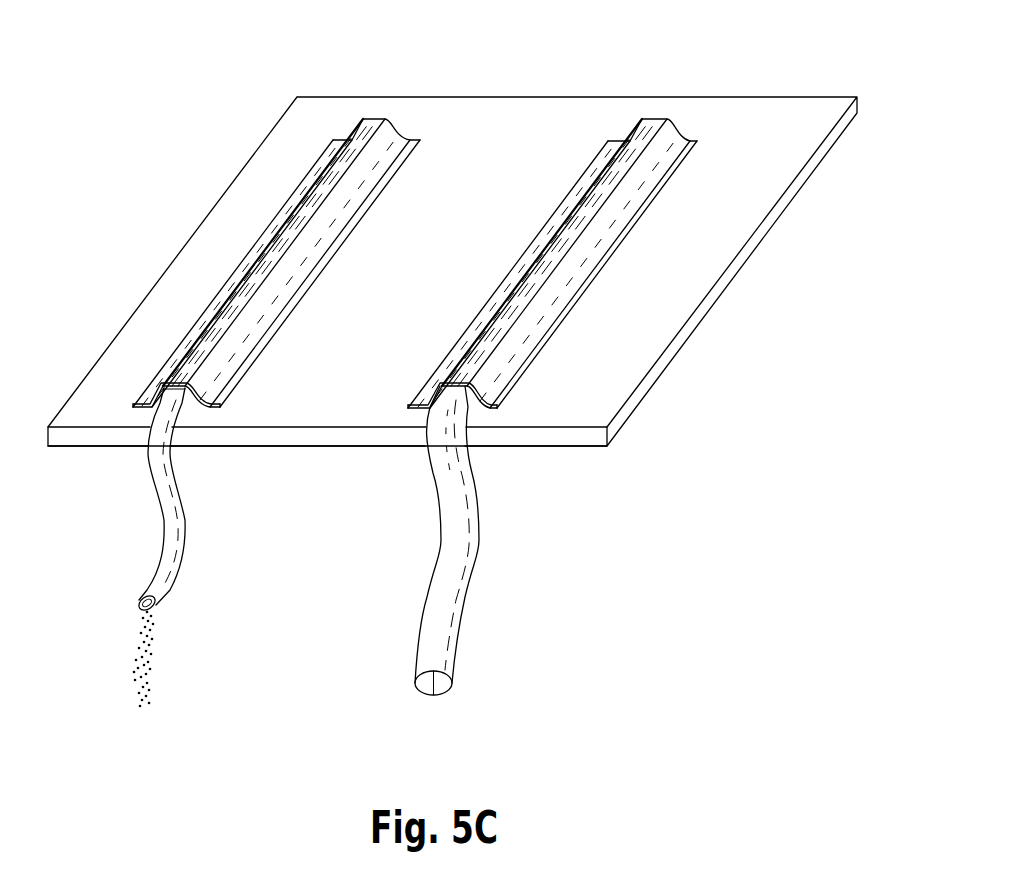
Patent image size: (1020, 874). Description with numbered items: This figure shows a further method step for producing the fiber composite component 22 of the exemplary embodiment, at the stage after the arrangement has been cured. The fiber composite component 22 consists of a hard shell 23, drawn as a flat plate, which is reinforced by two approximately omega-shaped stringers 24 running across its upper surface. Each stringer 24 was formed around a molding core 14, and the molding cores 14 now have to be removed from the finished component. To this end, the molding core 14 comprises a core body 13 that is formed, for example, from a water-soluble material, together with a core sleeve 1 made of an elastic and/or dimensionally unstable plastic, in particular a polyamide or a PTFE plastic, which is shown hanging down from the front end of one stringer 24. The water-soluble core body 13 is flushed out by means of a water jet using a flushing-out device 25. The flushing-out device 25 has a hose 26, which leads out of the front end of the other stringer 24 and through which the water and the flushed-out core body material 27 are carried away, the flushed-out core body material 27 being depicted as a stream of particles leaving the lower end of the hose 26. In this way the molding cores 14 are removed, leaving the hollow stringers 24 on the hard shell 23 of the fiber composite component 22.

The core sleeve 1 is at (467, 552).
The core body 13 is at (158, 385).
The molding core 14 is at (176, 381).
The fiber composite component 22 is at (662, 510).
The hard shell 23 is at (610, 370).
The stringer 24 is at (386, 98).
The flushing-out device 25 is at (130, 525).
The hose 26 is at (173, 510).
The flushed-out core body material 27 is at (152, 674).